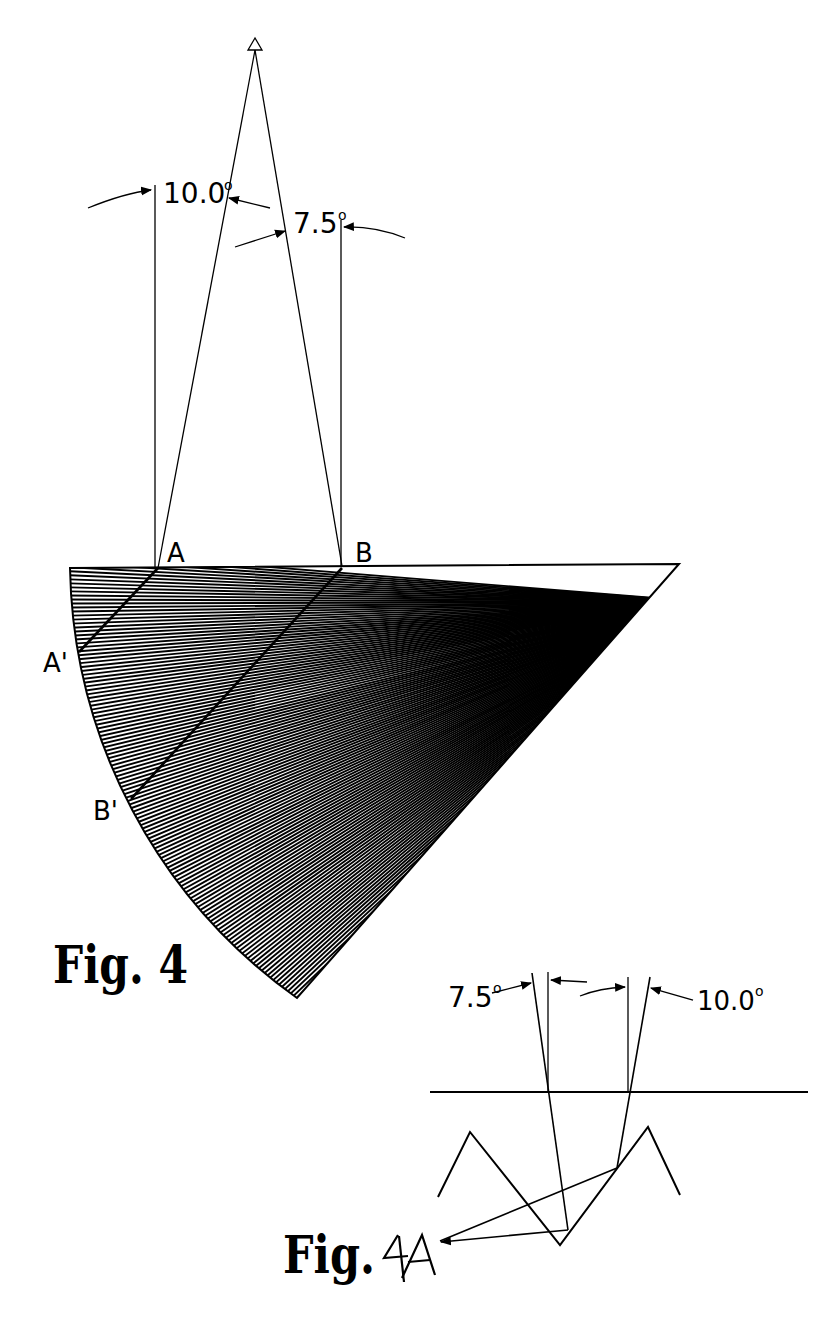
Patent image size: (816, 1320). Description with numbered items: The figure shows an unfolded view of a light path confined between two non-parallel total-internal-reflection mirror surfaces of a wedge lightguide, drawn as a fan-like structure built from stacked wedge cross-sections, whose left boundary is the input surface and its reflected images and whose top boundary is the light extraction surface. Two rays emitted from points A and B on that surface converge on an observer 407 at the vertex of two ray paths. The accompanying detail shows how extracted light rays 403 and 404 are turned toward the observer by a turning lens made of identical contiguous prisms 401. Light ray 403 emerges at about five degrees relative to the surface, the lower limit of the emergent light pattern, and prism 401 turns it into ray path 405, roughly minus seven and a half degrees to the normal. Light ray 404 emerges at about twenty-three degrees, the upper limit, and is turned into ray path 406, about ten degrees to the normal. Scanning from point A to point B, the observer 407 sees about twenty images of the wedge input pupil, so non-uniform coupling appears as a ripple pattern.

In FIG. 4, the observer 407 is at (250, 288).
In FIG. 4A, the prism 401 is at (665, 1160).
In FIG. 4A, the light ray 403 is at (500, 1237).
In FIG. 4A, the light ray 404 is at (508, 1213).
In FIG. 4A, the ray path 405 is at (547, 1058).
In FIG. 4A, the ray path 406 is at (640, 1054).